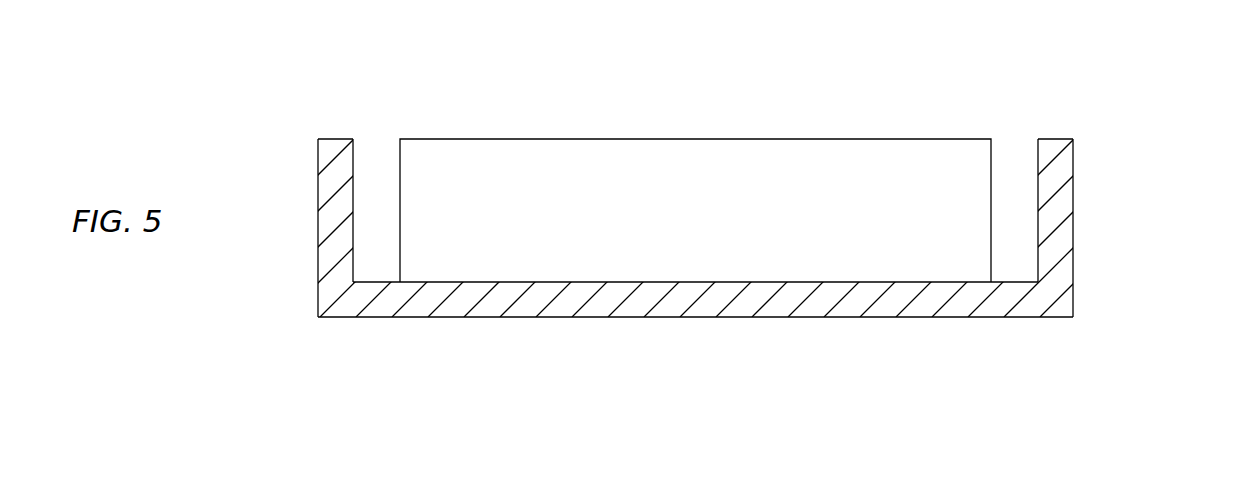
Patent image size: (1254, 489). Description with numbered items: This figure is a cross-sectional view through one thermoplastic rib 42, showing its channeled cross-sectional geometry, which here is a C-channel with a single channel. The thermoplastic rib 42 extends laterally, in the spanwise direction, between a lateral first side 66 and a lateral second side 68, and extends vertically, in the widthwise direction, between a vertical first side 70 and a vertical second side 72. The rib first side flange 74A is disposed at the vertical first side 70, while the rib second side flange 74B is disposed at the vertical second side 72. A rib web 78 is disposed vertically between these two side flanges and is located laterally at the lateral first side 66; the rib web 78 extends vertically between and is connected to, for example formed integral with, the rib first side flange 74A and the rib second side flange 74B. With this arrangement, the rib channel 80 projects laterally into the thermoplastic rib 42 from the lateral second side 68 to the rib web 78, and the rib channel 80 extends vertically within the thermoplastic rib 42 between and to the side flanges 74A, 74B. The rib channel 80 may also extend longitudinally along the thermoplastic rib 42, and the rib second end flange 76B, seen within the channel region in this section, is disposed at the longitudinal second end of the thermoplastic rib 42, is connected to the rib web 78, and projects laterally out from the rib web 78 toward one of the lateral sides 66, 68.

The thermoplastic rib 42 is at (1096, 78).
The lateral first side 66 is at (337, 318).
The lateral second side 68 is at (340, 139).
The vertical first side 70 is at (318, 224).
The vertical second side 72 is at (1074, 224).
The rib first side flange 74A is at (305, 181).
The rib second side flange 74B is at (1085, 176).
The rib second end flange 76B is at (803, 116).
The rib web 78 is at (652, 340).
The rib channel 80 is at (563, 172).